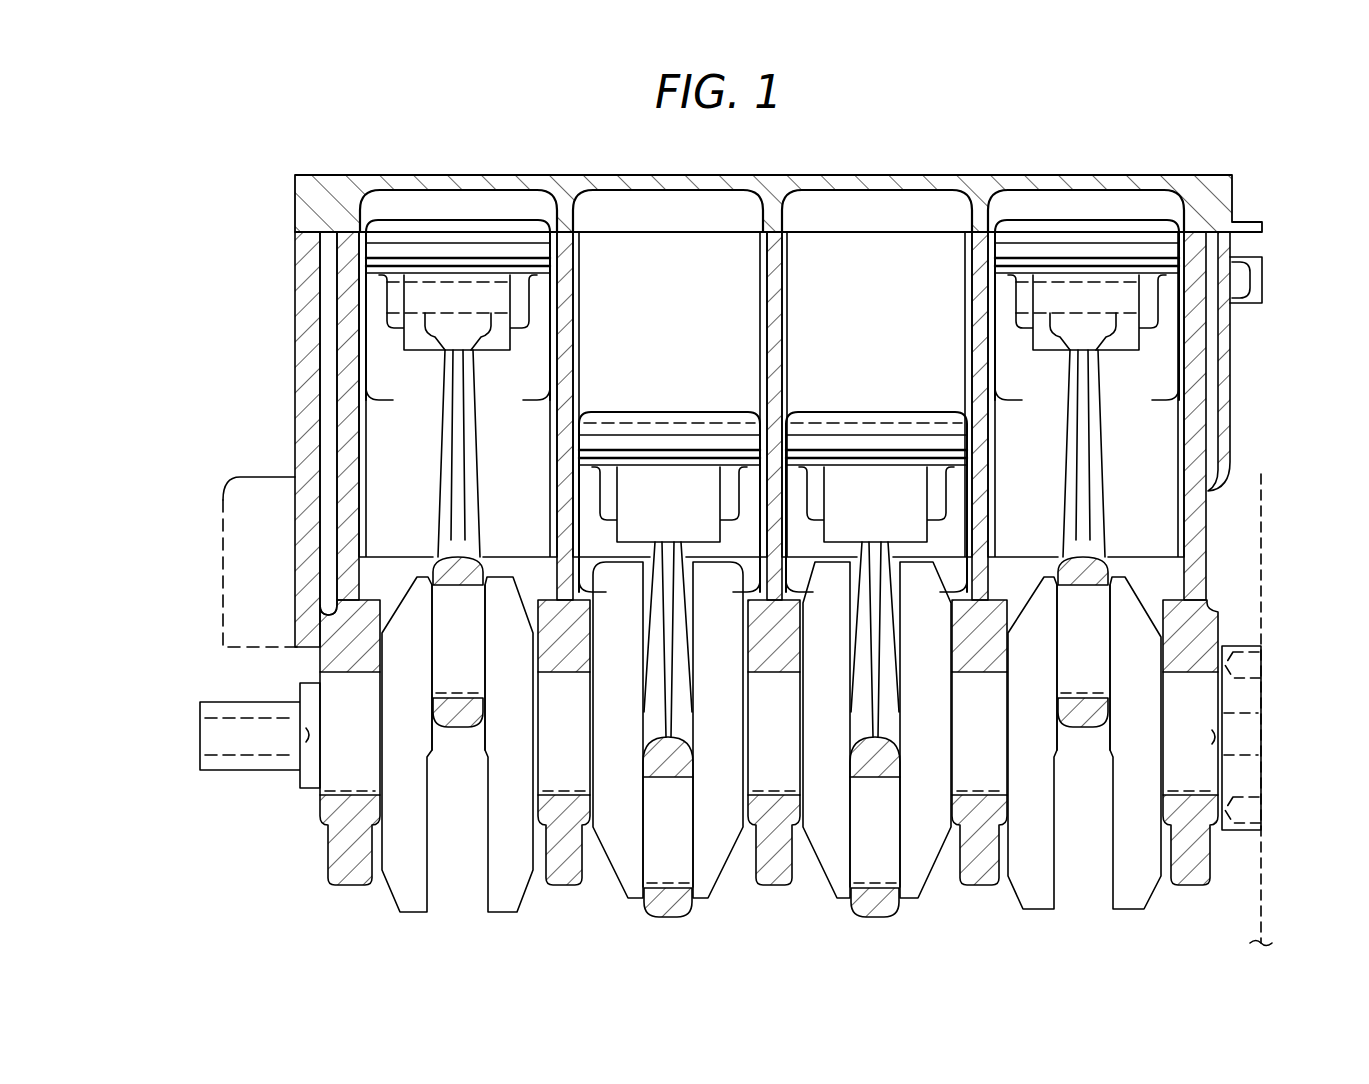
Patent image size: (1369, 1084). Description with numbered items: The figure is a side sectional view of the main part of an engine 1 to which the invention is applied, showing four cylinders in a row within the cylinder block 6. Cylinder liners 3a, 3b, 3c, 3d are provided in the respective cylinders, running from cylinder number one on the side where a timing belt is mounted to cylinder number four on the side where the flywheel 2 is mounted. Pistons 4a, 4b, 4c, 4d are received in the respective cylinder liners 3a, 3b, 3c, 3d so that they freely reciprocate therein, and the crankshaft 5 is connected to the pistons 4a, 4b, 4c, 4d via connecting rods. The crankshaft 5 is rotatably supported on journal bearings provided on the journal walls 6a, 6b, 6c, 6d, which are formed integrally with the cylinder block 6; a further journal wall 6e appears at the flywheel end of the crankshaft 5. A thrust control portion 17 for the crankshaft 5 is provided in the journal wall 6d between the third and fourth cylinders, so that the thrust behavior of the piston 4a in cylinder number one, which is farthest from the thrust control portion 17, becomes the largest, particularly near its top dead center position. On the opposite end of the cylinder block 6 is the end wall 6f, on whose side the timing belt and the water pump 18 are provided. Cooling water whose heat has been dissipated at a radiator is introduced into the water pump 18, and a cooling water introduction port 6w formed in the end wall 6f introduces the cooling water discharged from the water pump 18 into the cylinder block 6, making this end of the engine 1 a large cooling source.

The engine 1 is at (203, 284).
The flywheel 2 is at (1262, 498).
The cylinder liner 3a is at (365, 385).
The cylinder liner 3b is at (574, 276).
The cylinder liner 3c is at (788, 280).
The cylinder liner 3d is at (994, 372).
The piston 4a is at (497, 232).
The piston 4b is at (645, 412).
The piston 4c is at (830, 412).
The piston 4d is at (1050, 223).
The crankshaft 5 is at (200, 738).
The cylinder block 6 is at (1231, 361).
The journal wall 6a is at (350, 885).
The journal wall 6b is at (565, 885).
The journal wall 6c is at (772, 885).
The journal wall 6d is at (980, 885).
The fifth main bearing 6e is at (1190, 885).
The end wall 6f is at (295, 402).
The cooling water introduction port 6w is at (297, 618).
The thrust control portion 17 is at (945, 624).
The water pump 18 is at (222, 520).